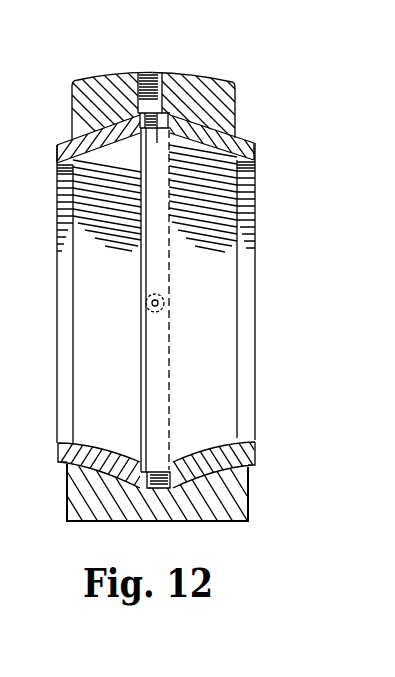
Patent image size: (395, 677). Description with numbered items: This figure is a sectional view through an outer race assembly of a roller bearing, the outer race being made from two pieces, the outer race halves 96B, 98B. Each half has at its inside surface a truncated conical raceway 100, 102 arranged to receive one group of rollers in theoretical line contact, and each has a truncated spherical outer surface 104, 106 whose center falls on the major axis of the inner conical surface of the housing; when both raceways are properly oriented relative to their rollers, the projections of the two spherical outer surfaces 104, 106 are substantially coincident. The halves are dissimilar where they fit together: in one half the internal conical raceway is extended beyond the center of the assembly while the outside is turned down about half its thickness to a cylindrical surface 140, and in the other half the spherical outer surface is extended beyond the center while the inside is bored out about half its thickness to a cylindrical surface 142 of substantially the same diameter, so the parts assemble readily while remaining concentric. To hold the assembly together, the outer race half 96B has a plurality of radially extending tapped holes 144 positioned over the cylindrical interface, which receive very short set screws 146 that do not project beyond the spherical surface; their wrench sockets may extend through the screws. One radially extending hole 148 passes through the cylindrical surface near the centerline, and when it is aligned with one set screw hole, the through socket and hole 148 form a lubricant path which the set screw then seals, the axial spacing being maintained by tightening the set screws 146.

The spherical outer surface 104 is at (101, 74).
The spherical outer surface 106 is at (201, 119).
The cylindrical surface 140 is at (164, 118).
The outer race half 96B is at (56, 145).
The outer race half 98B is at (250, 138).
The radially extending hole 148 is at (145, 140).
The conical raceway 100 is at (99, 445).
The conical raceway 102 is at (220, 436).
The cylindrical surface 142 is at (173, 461).
The holes 144 is at (141, 490).
The set screws 146 is at (165, 490).